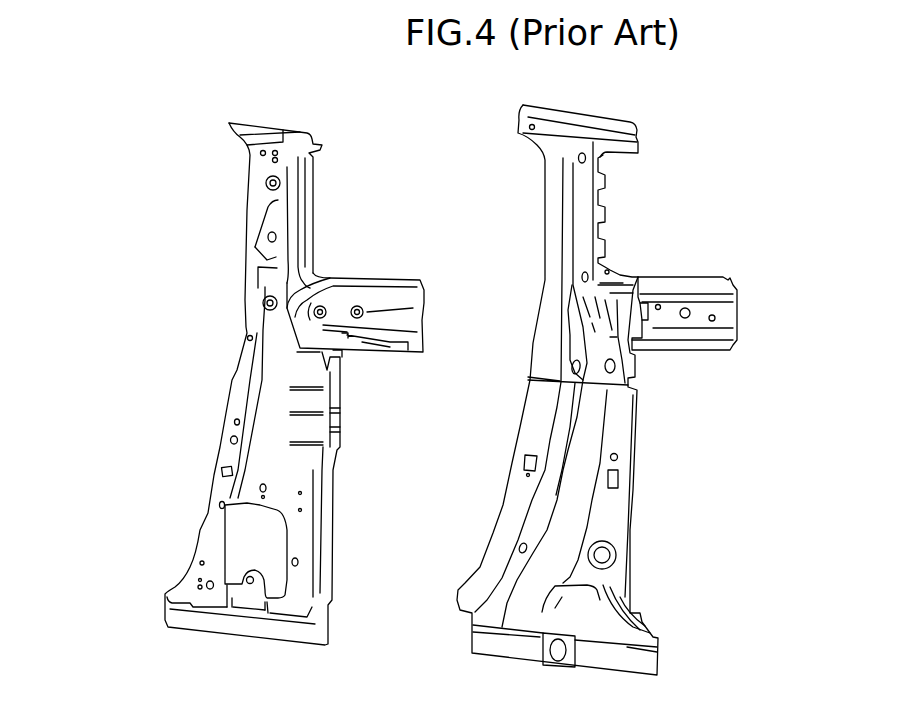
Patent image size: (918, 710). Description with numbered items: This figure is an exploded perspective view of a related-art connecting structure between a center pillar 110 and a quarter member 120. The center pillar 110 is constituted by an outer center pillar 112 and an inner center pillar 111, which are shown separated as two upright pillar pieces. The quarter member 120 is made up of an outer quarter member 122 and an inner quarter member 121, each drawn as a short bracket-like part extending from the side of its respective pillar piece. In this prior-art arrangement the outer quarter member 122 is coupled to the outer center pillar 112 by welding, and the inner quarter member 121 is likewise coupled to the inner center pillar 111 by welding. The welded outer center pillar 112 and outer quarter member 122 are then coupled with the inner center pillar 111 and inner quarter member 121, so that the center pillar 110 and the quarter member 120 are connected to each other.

The center pillar 110 is at (105, 210).
The inner center pillar 111 is at (280, 385).
The outer center pillar 112 is at (562, 193).
The quarter member 120 is at (803, 453).
The inner quarter member 121 is at (402, 318).
The outer quarter member 122 is at (700, 328).